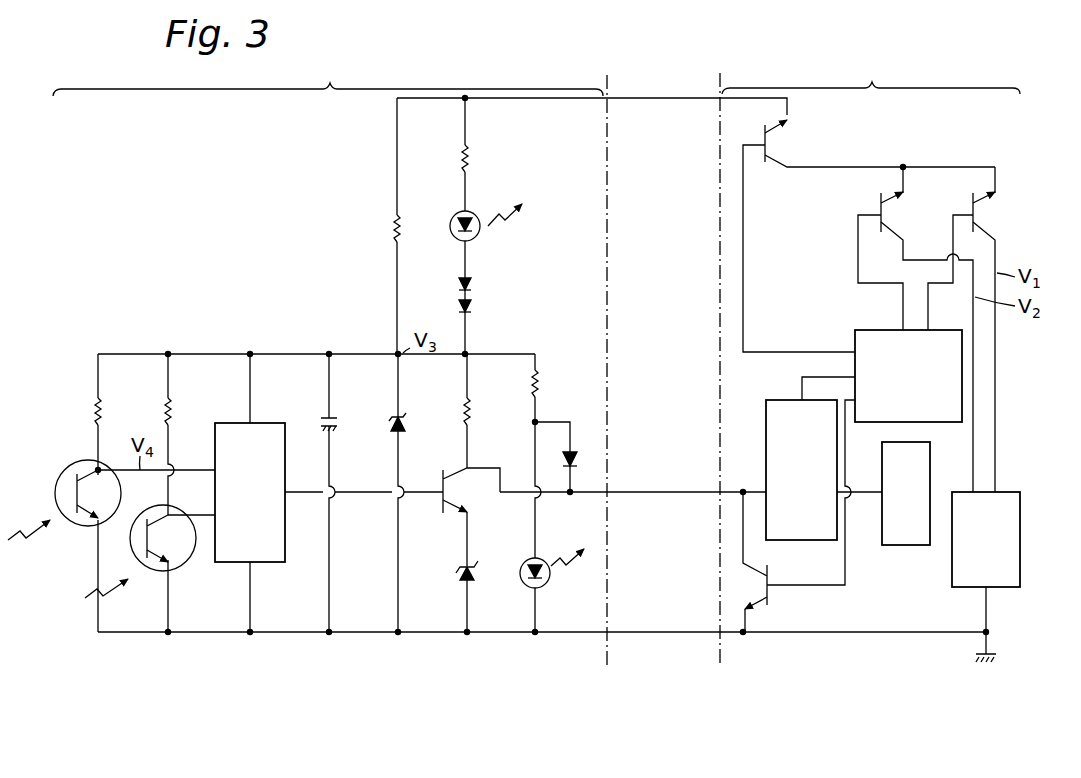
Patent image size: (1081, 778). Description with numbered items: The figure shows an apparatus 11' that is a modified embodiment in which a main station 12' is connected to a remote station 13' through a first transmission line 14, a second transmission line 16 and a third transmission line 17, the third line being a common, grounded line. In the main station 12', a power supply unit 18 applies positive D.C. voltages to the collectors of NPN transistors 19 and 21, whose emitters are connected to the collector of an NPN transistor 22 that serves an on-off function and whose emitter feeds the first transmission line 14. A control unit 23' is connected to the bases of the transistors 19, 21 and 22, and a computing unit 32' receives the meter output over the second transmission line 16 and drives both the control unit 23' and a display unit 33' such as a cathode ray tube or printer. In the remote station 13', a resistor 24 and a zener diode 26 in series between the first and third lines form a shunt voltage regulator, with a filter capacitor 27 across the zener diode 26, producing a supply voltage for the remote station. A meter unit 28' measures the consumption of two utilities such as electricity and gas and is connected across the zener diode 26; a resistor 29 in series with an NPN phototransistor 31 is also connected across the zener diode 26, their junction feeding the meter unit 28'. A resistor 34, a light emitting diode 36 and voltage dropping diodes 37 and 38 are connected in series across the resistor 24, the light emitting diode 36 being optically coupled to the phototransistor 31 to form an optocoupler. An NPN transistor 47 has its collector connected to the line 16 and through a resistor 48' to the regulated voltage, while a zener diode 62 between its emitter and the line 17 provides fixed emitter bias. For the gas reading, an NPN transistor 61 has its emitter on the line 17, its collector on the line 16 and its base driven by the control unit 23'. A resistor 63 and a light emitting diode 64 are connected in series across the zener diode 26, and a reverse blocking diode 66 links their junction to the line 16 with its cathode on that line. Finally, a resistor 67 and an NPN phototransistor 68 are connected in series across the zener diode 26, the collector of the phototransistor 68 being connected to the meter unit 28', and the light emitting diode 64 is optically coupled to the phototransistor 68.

The apparatus 11' is at (653, 340).
The main station 12' is at (871, 75).
The remote station 13' is at (328, 76).
The first transmission line 14 is at (650, 97).
The second transmission line 16 is at (645, 496).
The third transmission line 17 is at (636, 643).
The power supply unit 18 is at (1028, 524).
The NPN transistor 19 is at (992, 206).
The NPN transistor 21 is at (874, 197).
The NPN transistor 22 is at (772, 170).
The control unit 23' is at (864, 443).
The resistor 24 is at (392, 226).
The zener diode 26 is at (390, 435).
The filter capacitor 27 is at (338, 422).
The meter unit 28' is at (329, 493).
The resistor 29 is at (96, 412).
The NPN phototransistor 31 is at (79, 527).
The computing unit 32' is at (803, 459).
The display unit 33' is at (930, 490).
The resistor 34 is at (459, 151).
The light emitting diode 36 is at (452, 210).
The voltage dropping diode 37 is at (480, 284).
The voltage dropping diode 38 is at (480, 306).
The NPN transistor 47 is at (442, 513).
The resistor 48' is at (489, 411).
The NPN transistor 61 is at (772, 578).
The zener diode 62 is at (460, 578).
The resistor 63 is at (541, 388).
The light emitting diode 64 is at (522, 580).
The reverse blocking diode 66 is at (579, 454).
The resistor 67 is at (167, 412).
The NPN phototransistor 68 is at (149, 555).